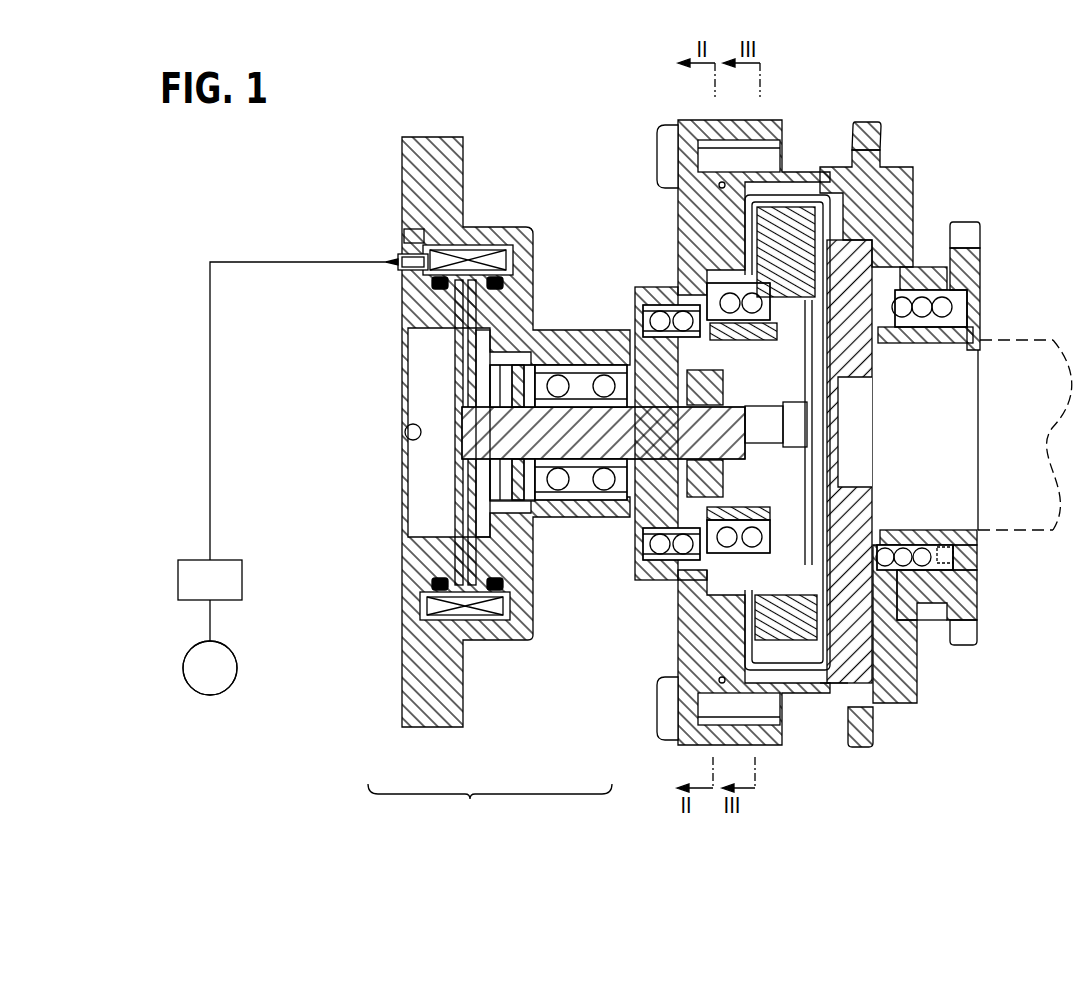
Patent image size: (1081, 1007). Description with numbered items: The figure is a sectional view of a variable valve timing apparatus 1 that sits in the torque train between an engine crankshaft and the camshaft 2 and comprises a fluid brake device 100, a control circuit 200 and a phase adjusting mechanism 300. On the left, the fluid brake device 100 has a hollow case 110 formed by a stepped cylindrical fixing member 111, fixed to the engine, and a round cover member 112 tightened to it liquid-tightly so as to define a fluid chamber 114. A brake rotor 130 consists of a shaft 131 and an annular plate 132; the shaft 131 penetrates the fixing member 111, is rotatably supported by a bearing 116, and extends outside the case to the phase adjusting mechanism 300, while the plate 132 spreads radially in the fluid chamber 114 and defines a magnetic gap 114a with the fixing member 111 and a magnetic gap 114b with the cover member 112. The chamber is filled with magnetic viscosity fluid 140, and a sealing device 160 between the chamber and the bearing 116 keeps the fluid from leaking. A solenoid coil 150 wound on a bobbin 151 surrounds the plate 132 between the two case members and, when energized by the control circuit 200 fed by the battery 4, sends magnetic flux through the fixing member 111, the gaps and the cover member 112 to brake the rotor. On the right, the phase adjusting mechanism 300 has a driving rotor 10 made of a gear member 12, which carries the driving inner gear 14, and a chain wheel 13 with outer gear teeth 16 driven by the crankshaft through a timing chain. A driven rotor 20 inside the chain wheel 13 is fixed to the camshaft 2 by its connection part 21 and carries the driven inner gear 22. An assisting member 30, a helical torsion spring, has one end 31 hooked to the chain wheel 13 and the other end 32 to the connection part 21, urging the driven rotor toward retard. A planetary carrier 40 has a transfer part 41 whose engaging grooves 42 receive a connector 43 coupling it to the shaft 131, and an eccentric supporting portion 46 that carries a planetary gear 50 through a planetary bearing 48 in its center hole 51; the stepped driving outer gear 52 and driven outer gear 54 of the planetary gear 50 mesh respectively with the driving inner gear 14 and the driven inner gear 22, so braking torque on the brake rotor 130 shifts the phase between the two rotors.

The variable valve timing apparatus 1 is at (490, 806).
The camshaft 2 is at (1038, 545).
The battery 4 is at (199, 695).
The driving rotor 10 is at (716, 391).
The gear member 12 is at (683, 76).
The chain wheel 13 is at (743, 125).
The driving inner gear 14 is at (678, 633).
The gear teeth 16 is at (882, 130).
The driven rotor 20 is at (870, 300).
The connection part 21 is at (885, 600).
The driven inner gear 22 is at (833, 693).
The assisting member 30 is at (920, 603).
The one end 31 is at (967, 582).
The other end 32 is at (912, 655).
The planetary carrier 40 is at (843, 230).
The transfer part 41 is at (695, 565).
The engaging grooves 42 is at (777, 423).
The connector 43 is at (665, 315).
The supporting portion 46 is at (680, 605).
The planetary bearing 48 is at (790, 312).
The planetary gear 50 is at (797, 509).
The center hole 51 is at (765, 300).
The driving outer gear 52 is at (767, 640).
The driven outer gear 54 is at (802, 668).
The fluid brake device 100 is at (477, 430).
The case 110 is at (438, 432).
The fixing member 111 is at (410, 172).
The cover member 112 is at (403, 237).
The fluid chamber 114 is at (470, 268).
The magnetic gap 114a is at (487, 307).
The magnetic gap 114b is at (460, 307).
The bearing 116 is at (612, 497).
The brake rotor 130 is at (494, 425).
The shaft 131 is at (505, 422).
The plate 132 is at (478, 372).
The magnetic viscosity fluid 140 is at (474, 552).
The solenoid coil 150 is at (468, 263).
The bobbin 151 is at (445, 273).
The sealing device 160 is at (487, 477).
The control circuit 200 is at (242, 600).
The phase adjusting mechanism 300 is at (821, 431).